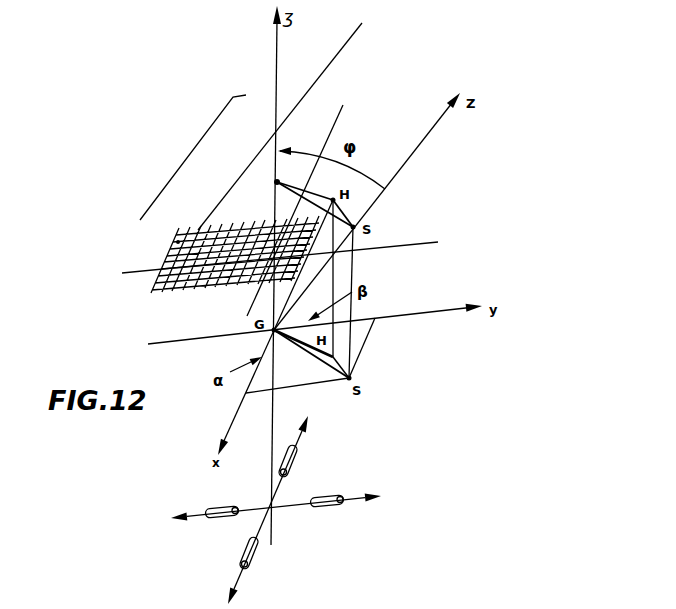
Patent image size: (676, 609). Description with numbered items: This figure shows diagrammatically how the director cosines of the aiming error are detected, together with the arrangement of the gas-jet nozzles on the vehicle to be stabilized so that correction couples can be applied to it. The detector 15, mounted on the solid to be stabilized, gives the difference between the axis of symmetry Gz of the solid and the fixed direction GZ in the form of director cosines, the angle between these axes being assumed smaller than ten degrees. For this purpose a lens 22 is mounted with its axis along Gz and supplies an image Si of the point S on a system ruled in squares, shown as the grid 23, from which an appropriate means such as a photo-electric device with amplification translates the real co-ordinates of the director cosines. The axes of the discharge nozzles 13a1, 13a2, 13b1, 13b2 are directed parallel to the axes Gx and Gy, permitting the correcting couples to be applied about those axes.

The detector 15 is at (188, 156).
The lens 22 is at (278, 131).
The solar cell grid 23 is at (234, 252).
The image of the point S Si is at (178, 242).
The discharge nozzle 13a1 is at (300, 462).
The discharge nozzle 13a2 is at (254, 554).
The discharge nozzle 13b1 is at (204, 498).
The discharge nozzle 13b2 is at (343, 485).